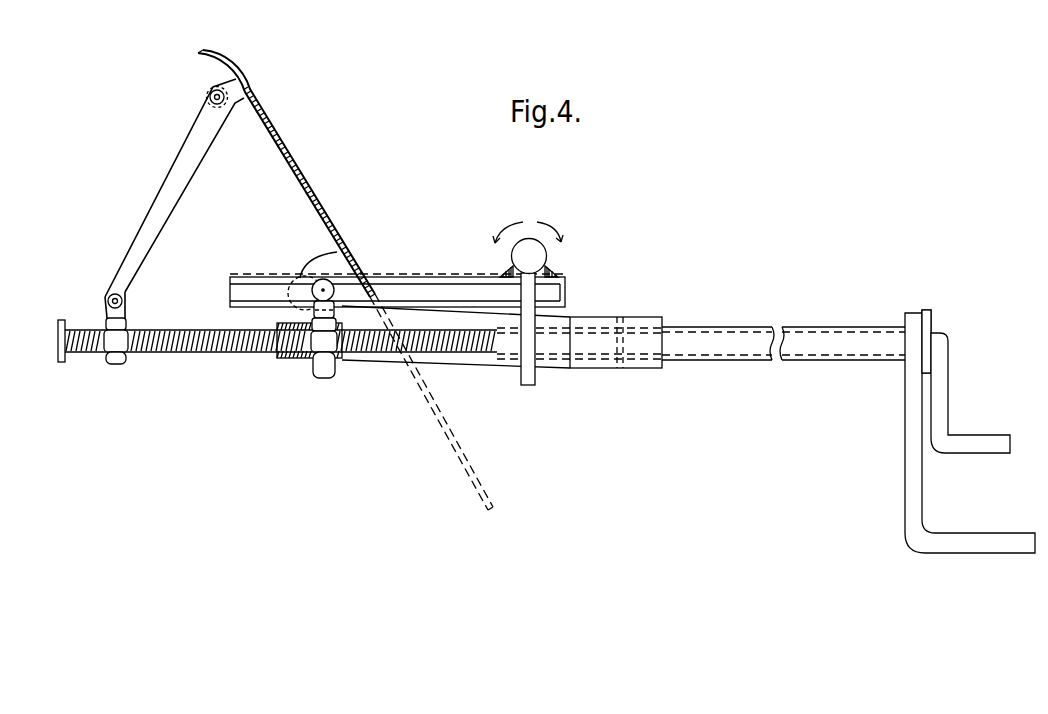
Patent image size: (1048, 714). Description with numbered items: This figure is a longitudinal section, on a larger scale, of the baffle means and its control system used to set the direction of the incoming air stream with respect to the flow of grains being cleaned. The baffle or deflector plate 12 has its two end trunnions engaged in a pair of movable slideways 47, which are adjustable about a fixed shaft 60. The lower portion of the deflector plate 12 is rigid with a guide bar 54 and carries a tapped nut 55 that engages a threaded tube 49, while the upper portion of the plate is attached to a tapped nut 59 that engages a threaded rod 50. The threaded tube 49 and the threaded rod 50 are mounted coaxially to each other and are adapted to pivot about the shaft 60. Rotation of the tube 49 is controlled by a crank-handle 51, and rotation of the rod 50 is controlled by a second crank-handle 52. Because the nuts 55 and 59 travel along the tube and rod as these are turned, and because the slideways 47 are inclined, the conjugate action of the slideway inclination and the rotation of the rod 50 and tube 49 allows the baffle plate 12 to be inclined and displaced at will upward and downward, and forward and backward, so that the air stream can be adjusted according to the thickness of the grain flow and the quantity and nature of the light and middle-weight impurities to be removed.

The deflector plate 12 is at (296, 166).
The movable slideways 47 is at (432, 280).
The threaded tube 49 is at (730, 338).
The threaded rod 50 is at (218, 352).
The crank-handle 51 is at (912, 442).
The crank-handle 52 is at (992, 446).
The guide bar 54 is at (558, 320).
The tapped nut 55 is at (320, 378).
The tapped nut 59 is at (116, 364).
The fixed shaft 60 is at (528, 250).